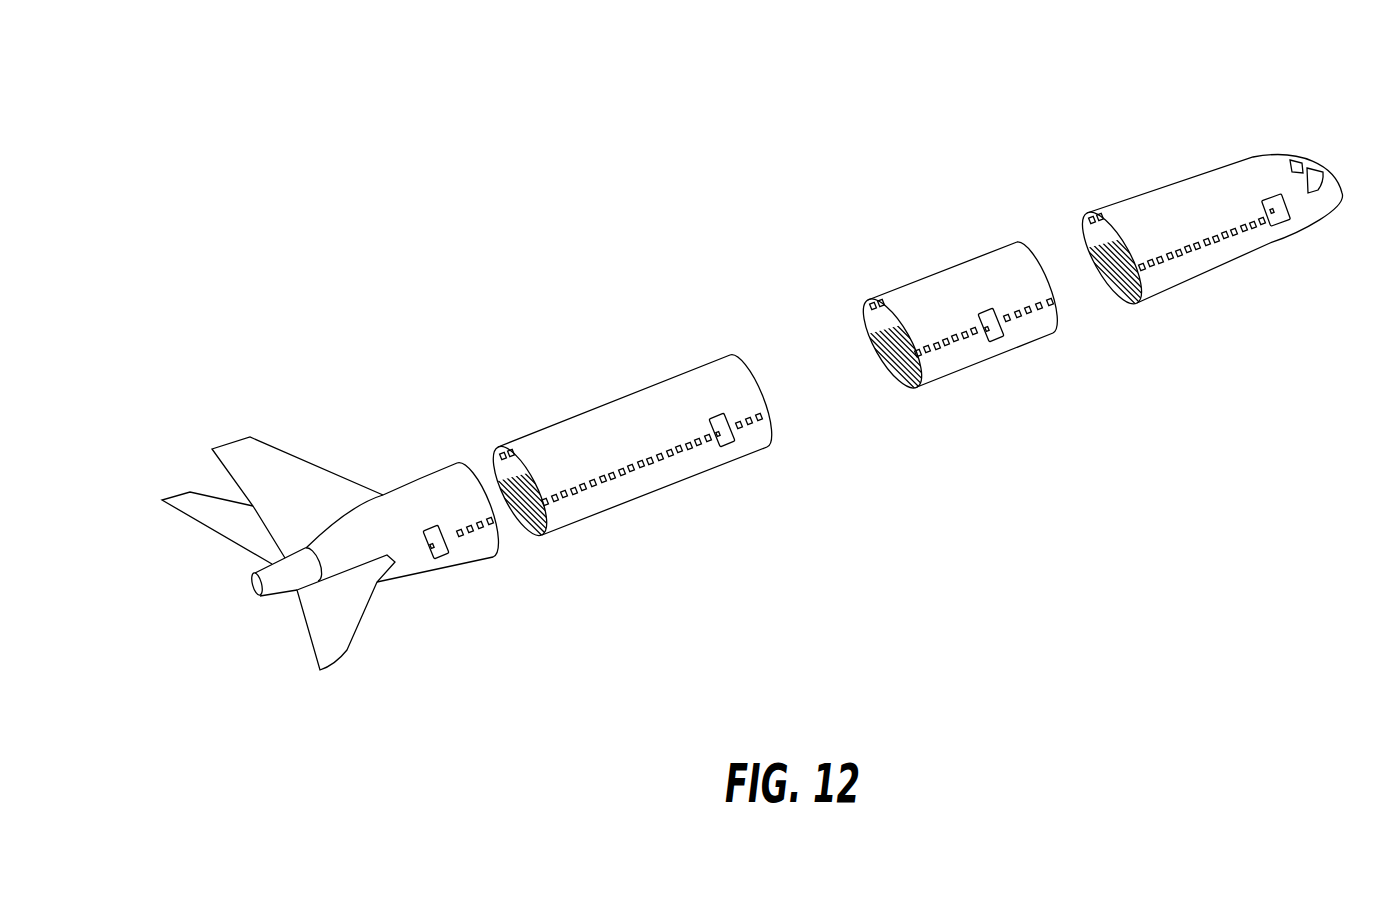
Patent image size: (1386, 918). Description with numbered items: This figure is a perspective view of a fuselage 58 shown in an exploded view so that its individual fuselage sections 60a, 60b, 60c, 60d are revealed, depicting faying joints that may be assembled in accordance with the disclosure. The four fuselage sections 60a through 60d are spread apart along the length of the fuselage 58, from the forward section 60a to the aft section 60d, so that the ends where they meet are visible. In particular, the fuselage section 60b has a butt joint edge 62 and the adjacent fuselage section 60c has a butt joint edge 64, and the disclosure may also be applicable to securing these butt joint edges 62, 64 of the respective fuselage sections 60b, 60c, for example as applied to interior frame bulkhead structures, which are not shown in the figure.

The fuselage 58 is at (1012, 118).
The fuselage section 60a is at (1153, 190).
The fuselage section 60b is at (943, 273).
The fuselage section 60c is at (615, 402).
The fuselage section 60d is at (413, 483).
The butt joint edge 62 is at (887, 380).
The butt joint edge 64 is at (770, 435).